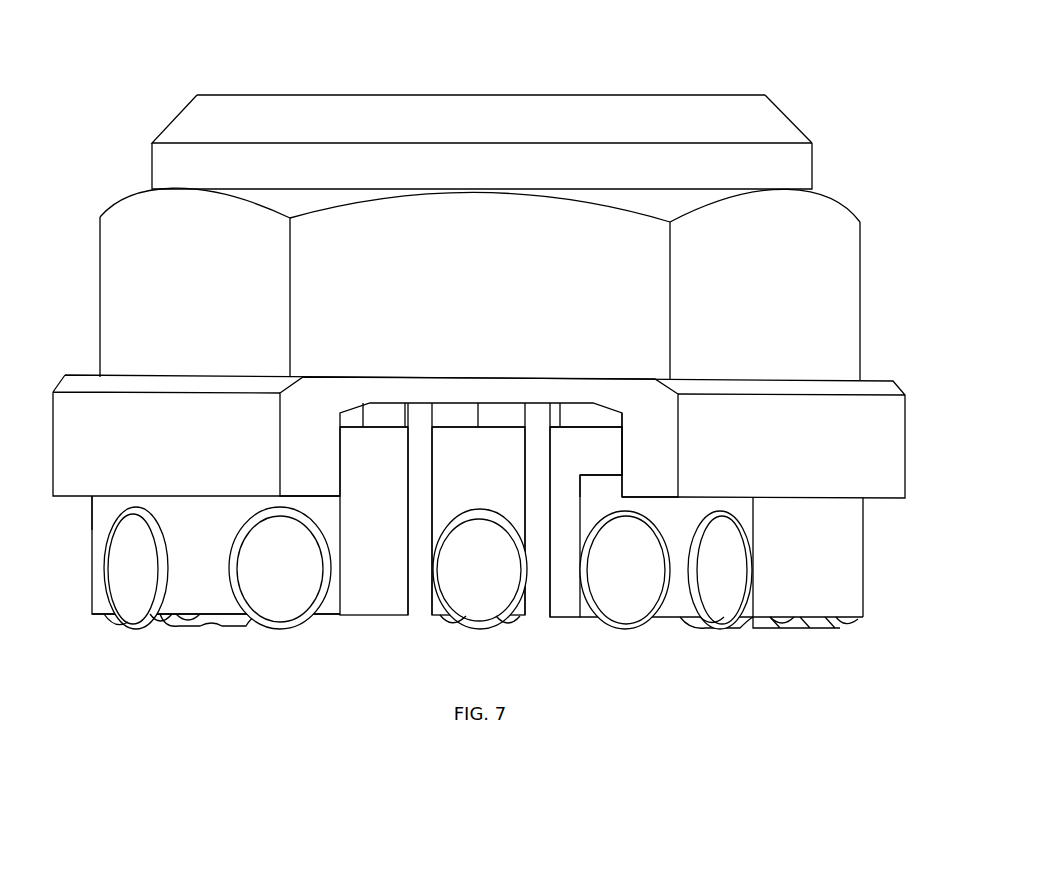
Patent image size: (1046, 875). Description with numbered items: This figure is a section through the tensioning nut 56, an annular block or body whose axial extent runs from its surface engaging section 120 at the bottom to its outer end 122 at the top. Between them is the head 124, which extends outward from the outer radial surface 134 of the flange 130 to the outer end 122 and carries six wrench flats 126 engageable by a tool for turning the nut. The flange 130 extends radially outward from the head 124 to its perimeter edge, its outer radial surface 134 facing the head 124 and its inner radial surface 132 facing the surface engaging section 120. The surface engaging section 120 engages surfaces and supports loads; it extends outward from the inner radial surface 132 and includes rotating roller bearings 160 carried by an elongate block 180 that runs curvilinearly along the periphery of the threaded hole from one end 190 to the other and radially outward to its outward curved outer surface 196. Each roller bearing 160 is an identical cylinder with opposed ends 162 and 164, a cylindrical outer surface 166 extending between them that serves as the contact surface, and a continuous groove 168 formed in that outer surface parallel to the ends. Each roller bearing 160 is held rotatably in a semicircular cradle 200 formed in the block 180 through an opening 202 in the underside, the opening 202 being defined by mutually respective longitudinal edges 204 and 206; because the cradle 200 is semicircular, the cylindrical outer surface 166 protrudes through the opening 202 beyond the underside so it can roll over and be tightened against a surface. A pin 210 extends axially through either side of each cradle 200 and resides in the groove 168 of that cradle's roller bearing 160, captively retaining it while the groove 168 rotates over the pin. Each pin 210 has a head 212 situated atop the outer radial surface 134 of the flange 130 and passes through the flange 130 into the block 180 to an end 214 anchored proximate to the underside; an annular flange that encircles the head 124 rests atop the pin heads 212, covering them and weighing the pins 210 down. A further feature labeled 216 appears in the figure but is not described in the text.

The outer end 122 is at (703, 97).
The tensioning nut 56 is at (804, 116).
The wrench flats 126 is at (821, 233).
The head 124 is at (861, 251).
The housing flange 216 is at (894, 380).
The head 212 is at (423, 410).
The outer radial surface 134 is at (473, 410).
The flange 130 is at (610, 440).
The pin 210 is at (537, 452).
The inner radial surface 132 is at (620, 485).
The end 214 is at (417, 620).
The longitudinal edge 206 is at (437, 620).
The longitudinal edge 204 is at (523, 623).
The outer surface 196 is at (193, 513).
The block 180 is at (90, 513).
The end 190 is at (870, 521).
The surface engaging section 120 is at (868, 620).
The roller bearings 160 is at (475, 535).
The semicircular cradle 200 is at (152, 540).
The opening 202 is at (487, 617).
The end 162 is at (245, 620).
The end 164 is at (110, 616).
The continuous groove 168 is at (167, 618).
The cylindrical outer surface 166 is at (190, 627).